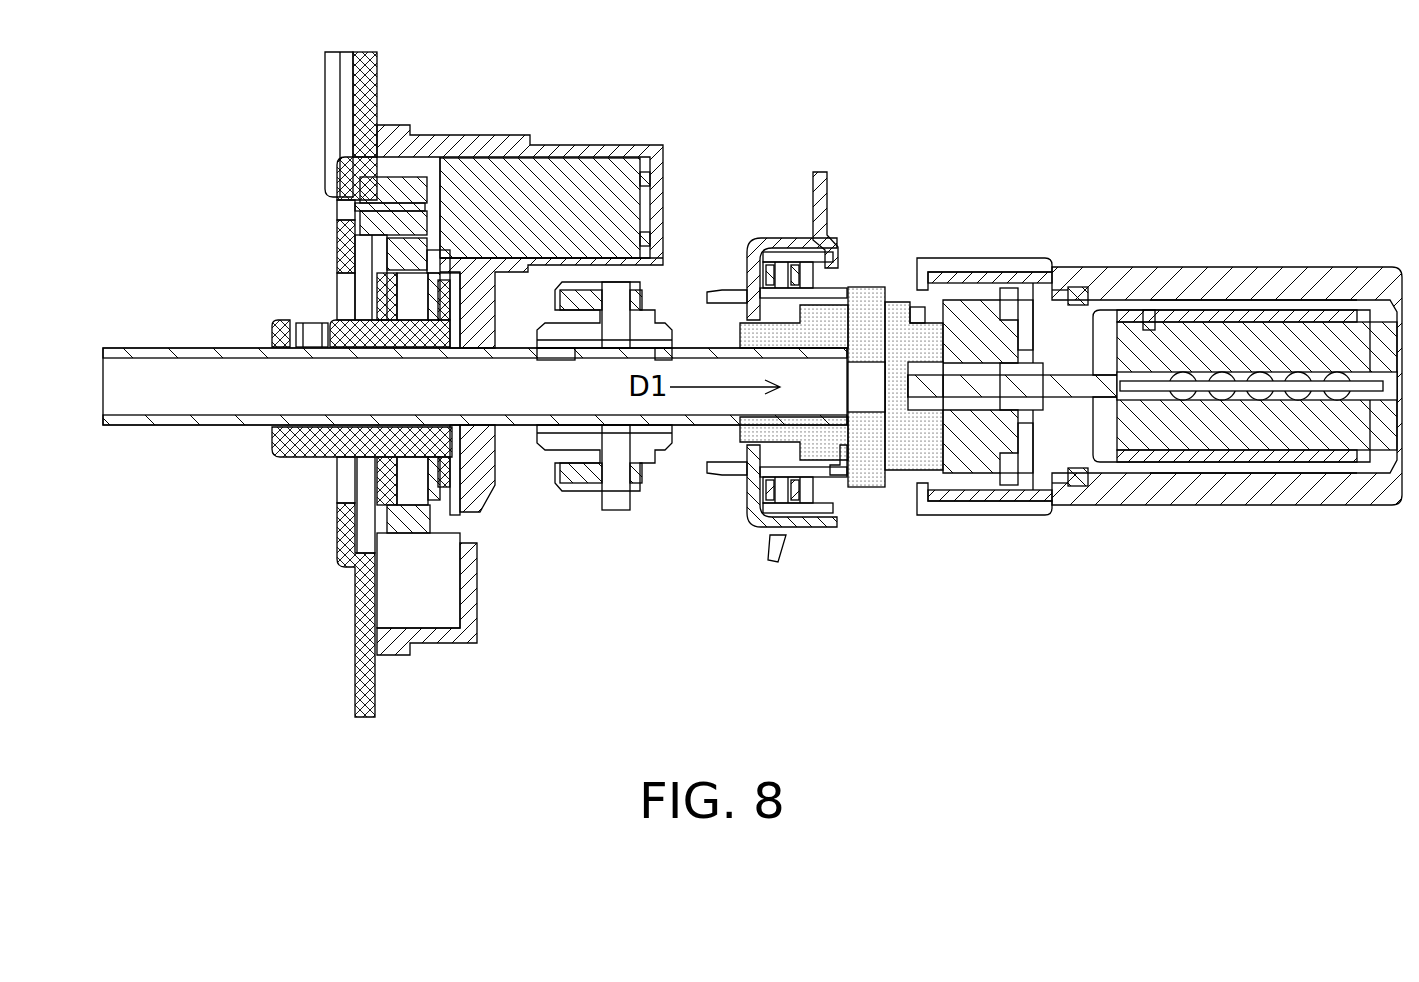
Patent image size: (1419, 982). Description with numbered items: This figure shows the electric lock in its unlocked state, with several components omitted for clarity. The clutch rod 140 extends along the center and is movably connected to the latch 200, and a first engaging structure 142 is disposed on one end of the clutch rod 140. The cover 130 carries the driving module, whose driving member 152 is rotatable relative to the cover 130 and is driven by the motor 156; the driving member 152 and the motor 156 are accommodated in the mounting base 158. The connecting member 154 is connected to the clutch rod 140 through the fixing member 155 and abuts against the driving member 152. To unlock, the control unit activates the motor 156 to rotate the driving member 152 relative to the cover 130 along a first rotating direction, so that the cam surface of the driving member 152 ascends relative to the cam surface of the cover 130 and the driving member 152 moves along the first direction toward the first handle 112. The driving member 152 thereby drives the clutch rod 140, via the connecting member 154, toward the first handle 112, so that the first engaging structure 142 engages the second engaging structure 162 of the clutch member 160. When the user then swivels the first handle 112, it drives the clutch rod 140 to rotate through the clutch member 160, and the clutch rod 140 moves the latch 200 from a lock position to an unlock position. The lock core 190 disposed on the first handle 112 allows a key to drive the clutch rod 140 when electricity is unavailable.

The first handle 112 is at (1270, 285).
The cover 130 is at (372, 87).
The clutch rod 140 is at (697, 418).
The first engaging structure 142 is at (835, 479).
The driving member 152 is at (412, 520).
The connecting member 154 is at (303, 440).
The fixing member 155 is at (300, 318).
The motor 156 is at (592, 193).
The mounting base 158 is at (470, 578).
The clutch member 160 is at (930, 337).
The second engaging structure 162 is at (867, 327).
The lock core 190 is at (1268, 425).
The latch 200 is at (625, 540).